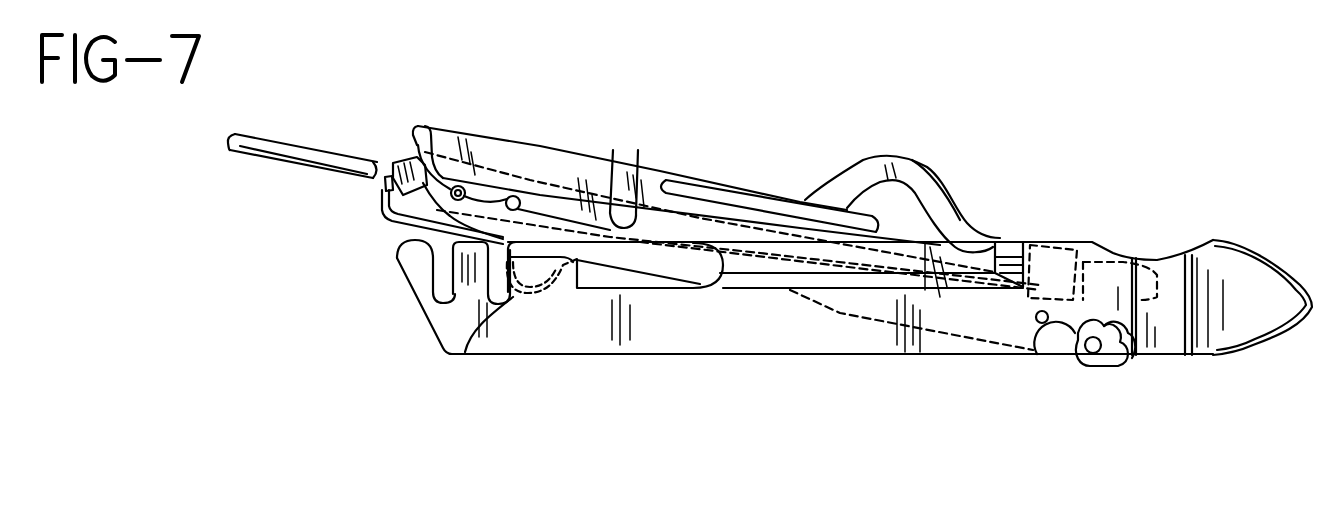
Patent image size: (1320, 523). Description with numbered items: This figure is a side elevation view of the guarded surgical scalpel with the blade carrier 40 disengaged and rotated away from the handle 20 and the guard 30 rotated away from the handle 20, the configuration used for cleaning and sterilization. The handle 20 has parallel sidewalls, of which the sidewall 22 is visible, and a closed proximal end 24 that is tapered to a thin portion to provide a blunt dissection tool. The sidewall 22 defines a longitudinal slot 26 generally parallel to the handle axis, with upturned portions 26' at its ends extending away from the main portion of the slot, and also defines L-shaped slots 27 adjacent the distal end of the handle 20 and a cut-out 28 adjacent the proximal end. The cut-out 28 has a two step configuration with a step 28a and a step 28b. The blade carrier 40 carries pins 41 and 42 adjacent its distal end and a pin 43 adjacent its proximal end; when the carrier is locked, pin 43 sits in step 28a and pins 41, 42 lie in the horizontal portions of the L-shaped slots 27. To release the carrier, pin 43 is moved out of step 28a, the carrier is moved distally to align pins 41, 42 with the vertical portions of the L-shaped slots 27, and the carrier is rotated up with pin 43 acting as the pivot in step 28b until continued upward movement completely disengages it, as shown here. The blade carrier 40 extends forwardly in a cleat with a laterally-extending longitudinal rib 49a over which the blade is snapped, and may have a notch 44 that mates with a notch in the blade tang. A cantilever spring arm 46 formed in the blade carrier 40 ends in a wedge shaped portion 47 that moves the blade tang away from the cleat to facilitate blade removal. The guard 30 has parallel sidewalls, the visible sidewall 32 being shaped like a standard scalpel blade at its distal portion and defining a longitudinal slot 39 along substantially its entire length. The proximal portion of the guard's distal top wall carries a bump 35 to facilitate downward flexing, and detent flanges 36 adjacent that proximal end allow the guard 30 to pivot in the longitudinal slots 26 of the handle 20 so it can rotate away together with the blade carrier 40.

The handle 20 is at (785, 355).
The sidewall 22 is at (906, 355).
The proximal end 24 is at (1240, 292).
The longitudinal slot 26 is at (800, 331).
The upturned portion 26' is at (796, 280).
The L-shaped slot 27 is at (455, 303).
The cut-out 28 is at (1110, 357).
The step 28a is at (1175, 385).
The step 28b is at (1037, 355).
The guard 30 is at (536, 152).
The sidewall 32 is at (580, 173).
The bump 35 is at (877, 160).
The detent flange 36 is at (1023, 247).
The longitudinal slot 39 is at (388, 160).
The blade carrier 40 is at (295, 153).
The pin 41 is at (477, 172).
The pin 42 is at (425, 170).
The pin 43 is at (1150, 349).
The notch 44 is at (392, 157).
The cantilever spring arm 46 is at (385, 192).
The wedge shaped portion 47 is at (385, 203).
The longitudinal rib 49a is at (233, 147).